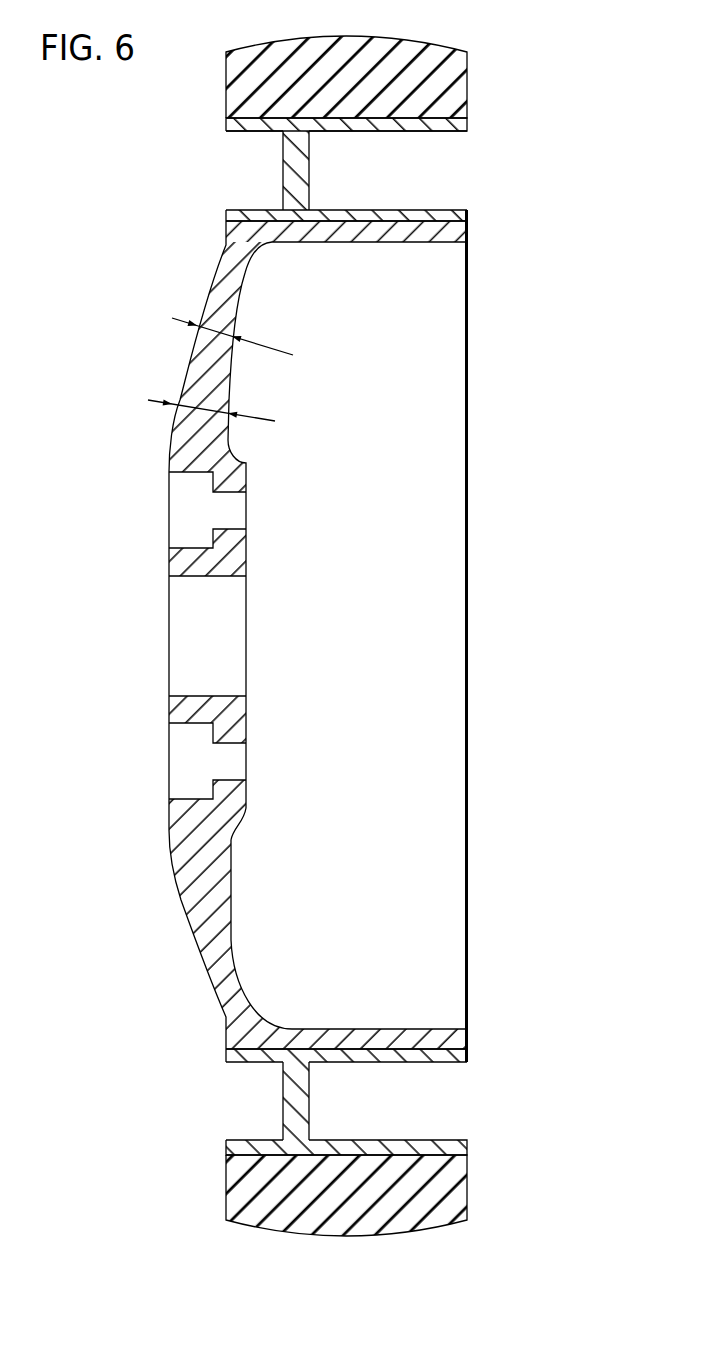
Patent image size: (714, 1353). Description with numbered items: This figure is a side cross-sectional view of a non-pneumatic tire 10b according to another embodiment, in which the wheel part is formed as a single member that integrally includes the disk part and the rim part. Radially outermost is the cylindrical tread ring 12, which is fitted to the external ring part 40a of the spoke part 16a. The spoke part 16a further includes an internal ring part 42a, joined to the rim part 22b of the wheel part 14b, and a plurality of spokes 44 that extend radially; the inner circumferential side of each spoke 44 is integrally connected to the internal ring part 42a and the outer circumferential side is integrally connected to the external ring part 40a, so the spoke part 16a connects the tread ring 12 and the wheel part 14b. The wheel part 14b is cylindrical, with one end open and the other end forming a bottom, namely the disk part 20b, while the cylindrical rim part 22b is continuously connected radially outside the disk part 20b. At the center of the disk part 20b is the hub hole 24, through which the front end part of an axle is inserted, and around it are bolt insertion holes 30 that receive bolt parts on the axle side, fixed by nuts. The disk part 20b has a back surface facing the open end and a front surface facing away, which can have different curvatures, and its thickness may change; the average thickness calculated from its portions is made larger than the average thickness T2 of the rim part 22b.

The non-pneumatic tire 10b is at (560, 116).
The tread ring 12 is at (238, 98).
The wheel part 14b is at (287, 636).
The spoke part 16a is at (467, 131).
The disk part 20b is at (207, 312).
The rim part 22b is at (396, 243).
The hub hole 24 is at (186, 617).
The bolt insertion hole 30 is at (186, 503).
The external ring part 40a is at (240, 131).
The internal ring part 42a is at (249, 211).
The spoke 44 is at (300, 175).
The average thickness of the rim part T2 is at (504, 200).